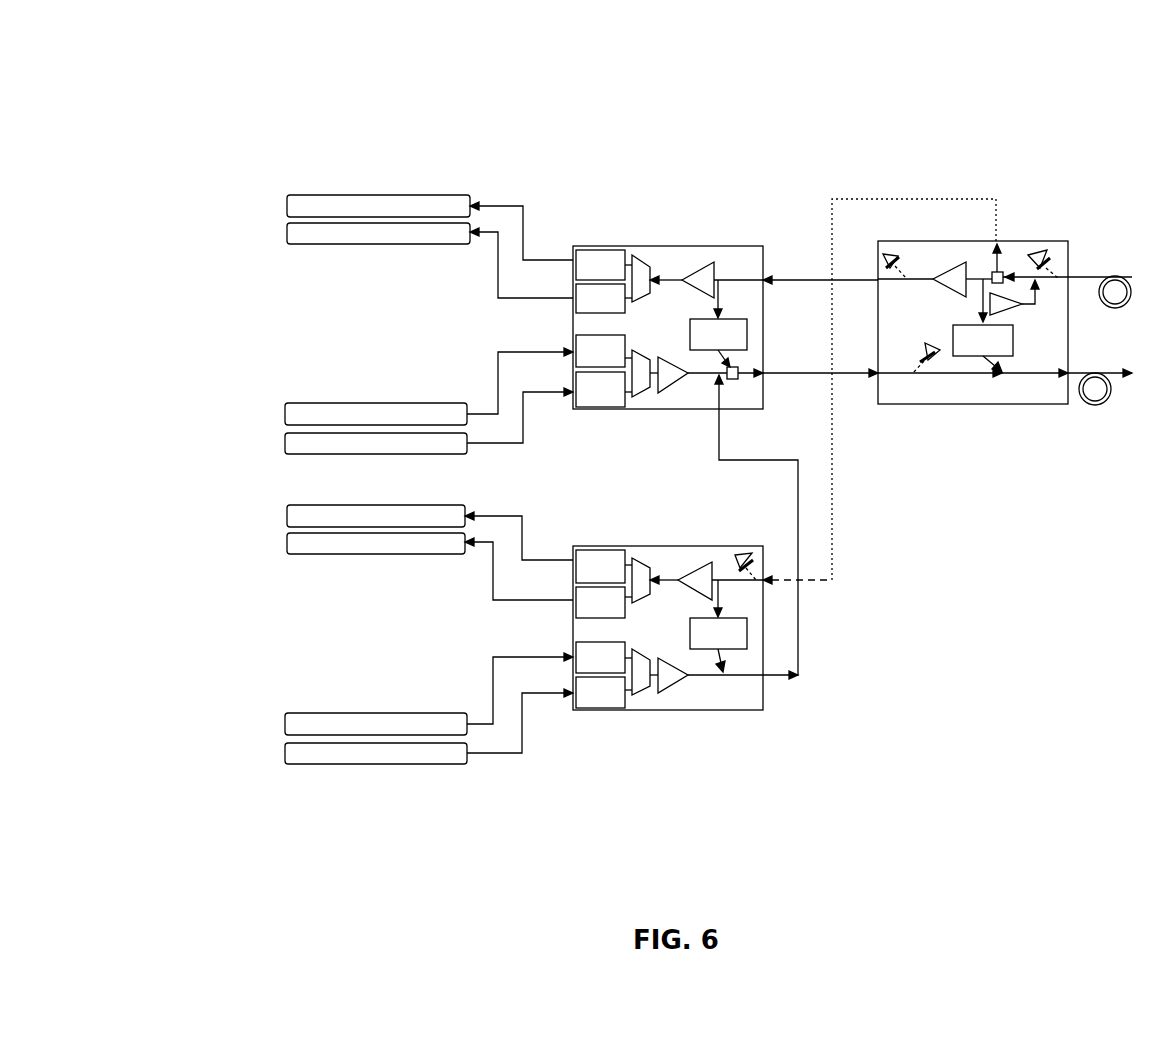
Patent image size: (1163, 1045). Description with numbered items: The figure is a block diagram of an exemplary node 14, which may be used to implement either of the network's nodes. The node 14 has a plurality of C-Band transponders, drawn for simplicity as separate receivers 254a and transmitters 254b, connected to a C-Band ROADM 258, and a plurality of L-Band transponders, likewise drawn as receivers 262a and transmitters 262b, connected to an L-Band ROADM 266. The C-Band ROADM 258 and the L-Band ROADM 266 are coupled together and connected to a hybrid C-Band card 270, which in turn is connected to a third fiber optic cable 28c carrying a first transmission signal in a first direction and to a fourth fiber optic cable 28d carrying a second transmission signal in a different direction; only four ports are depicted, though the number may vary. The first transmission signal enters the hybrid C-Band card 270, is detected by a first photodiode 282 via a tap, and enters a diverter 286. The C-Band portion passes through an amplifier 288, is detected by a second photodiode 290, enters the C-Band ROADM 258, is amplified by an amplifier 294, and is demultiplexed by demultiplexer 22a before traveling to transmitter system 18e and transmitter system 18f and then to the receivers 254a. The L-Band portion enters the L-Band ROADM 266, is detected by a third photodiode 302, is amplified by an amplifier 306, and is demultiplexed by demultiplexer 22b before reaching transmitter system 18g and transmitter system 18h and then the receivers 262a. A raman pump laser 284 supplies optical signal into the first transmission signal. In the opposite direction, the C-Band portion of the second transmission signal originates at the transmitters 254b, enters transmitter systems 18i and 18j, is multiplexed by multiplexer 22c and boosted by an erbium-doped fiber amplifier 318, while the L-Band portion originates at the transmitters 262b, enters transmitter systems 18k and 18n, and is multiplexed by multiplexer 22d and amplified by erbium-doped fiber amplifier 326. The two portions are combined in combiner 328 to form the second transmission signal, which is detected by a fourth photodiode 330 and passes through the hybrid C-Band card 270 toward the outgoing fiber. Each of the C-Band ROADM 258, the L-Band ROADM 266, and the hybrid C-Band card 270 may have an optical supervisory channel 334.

The node 14 is at (1042, 51).
The receivers 254a is at (283, 197).
The transmitters 254b is at (281, 405).
The receivers 262a is at (283, 507).
The transmitters 262b is at (281, 715).
The C-Band ROADM 258 is at (745, 246).
The L-Band ROADM 266 is at (765, 712).
The hybrid C-Band card 270 is at (1028, 240).
The transmitter system 18e is at (600, 265).
The transmitter system 18f is at (600, 298).
The transmitter system 18i is at (600, 351).
The transmitter system 18j is at (600, 389).
The transmitter system 18g is at (600, 566).
The transmitter system 18h is at (600, 602).
The transmitter system 18k is at (600, 657).
The transmitter system 18n is at (600, 692).
The demultiplexer 22a is at (641, 252).
The demultiplexer 22b is at (638, 556).
The multiplexer 22c is at (641, 399).
The multiplexer 22d is at (641, 698).
The amplifier 294 is at (697, 268).
The amplifier 306 is at (697, 570).
The erbium-doped fiber amplifier 318 is at (678, 388).
The erbium-doped fiber amplifier 326 is at (676, 690).
The optical supervisory channel 334 is at (851, 495).
The combiner 328 is at (734, 380).
The third photodiode 302 is at (740, 552).
The second photodiode 290 is at (880, 255).
The amplifier 288 is at (945, 265).
The diverter 286 is at (988, 268).
The first photodiode 282 is at (1060, 245).
The raman pump laser 284 is at (1015, 308).
The fourth photodiode 330 is at (920, 352).
The third fiber optic cable 28c is at (1118, 275).
The fourth fiber optic cable 28d is at (1095, 405).